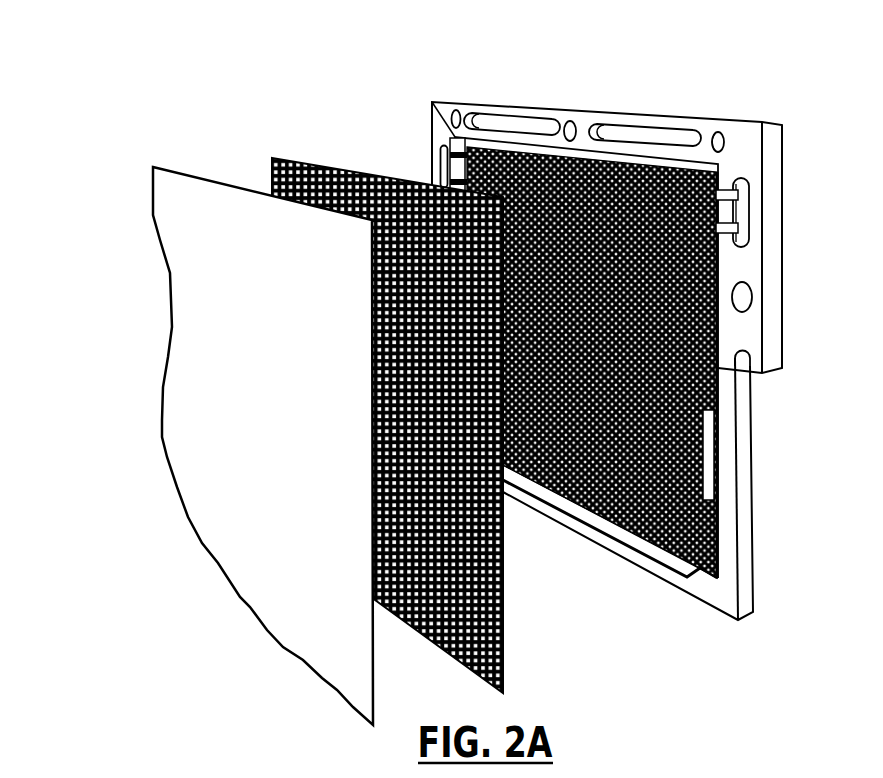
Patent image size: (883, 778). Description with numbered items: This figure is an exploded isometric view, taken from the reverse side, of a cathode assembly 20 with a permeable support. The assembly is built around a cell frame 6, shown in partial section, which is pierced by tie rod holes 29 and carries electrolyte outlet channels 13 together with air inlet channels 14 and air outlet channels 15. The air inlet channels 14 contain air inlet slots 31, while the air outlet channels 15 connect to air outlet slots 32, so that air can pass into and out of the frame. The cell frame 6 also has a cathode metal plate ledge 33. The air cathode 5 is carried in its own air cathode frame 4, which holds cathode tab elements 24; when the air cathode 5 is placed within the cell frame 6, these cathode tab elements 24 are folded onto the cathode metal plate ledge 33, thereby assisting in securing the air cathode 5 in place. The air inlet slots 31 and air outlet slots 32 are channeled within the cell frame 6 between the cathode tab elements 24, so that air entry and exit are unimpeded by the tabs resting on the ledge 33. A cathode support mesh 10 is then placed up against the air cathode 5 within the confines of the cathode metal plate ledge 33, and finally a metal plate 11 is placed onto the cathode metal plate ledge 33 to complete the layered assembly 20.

The air cathode frame 4 is at (742, 420).
The air cathode 5 is at (653, 343).
The cell frame 6 is at (603, 209).
The cathode support mesh 10 is at (268, 168).
The metal plate 11 is at (217, 385).
The electrolyte outlet channels 13 is at (640, 138).
The air inlet channels 14 is at (440, 157).
The air outlet channels 15 is at (747, 228).
The cathode assembly 20 is at (459, 381).
The cathode tab elements 24 is at (535, 152).
The tie rod holes 29 is at (722, 142).
The air inlet slots 31 is at (467, 158).
The air outlet slots 32 is at (738, 196).
The cathode metal plate ledge 33 is at (432, 102).